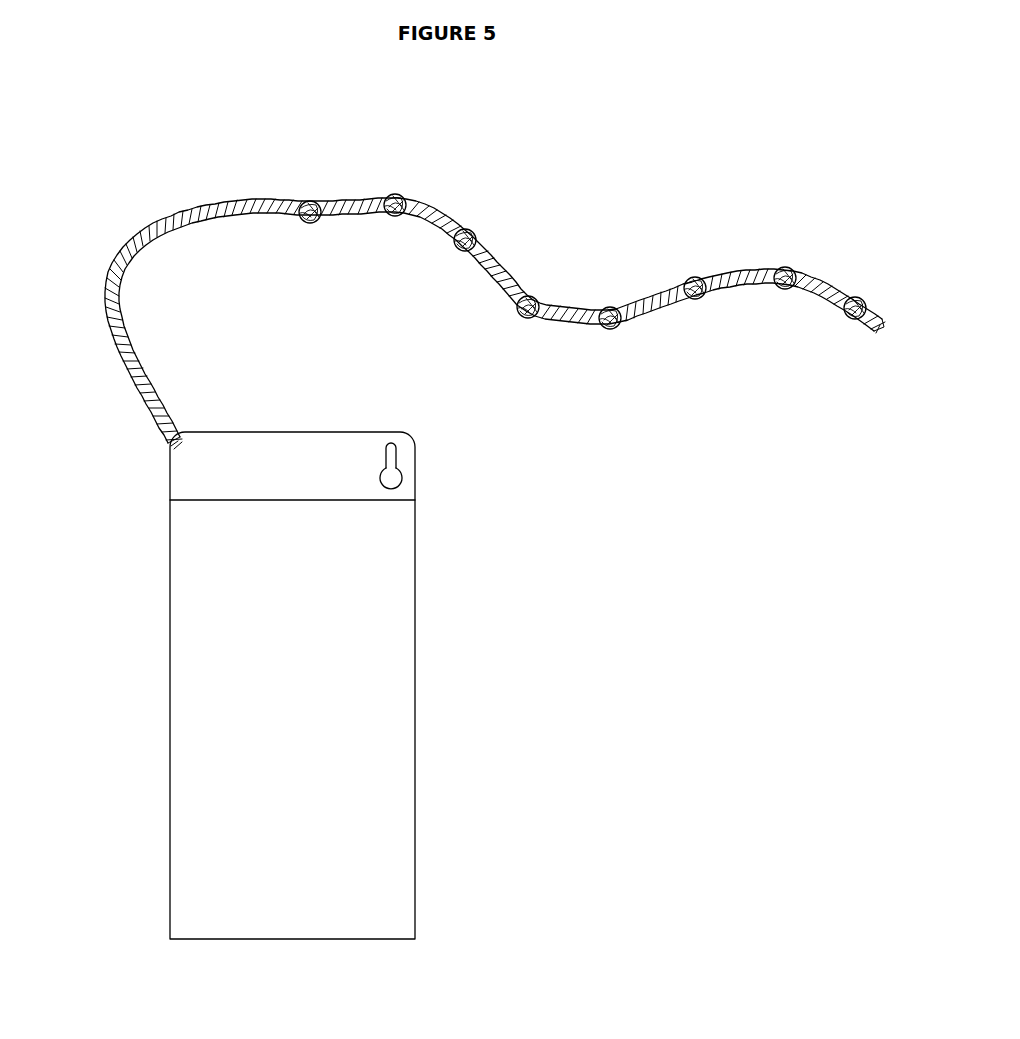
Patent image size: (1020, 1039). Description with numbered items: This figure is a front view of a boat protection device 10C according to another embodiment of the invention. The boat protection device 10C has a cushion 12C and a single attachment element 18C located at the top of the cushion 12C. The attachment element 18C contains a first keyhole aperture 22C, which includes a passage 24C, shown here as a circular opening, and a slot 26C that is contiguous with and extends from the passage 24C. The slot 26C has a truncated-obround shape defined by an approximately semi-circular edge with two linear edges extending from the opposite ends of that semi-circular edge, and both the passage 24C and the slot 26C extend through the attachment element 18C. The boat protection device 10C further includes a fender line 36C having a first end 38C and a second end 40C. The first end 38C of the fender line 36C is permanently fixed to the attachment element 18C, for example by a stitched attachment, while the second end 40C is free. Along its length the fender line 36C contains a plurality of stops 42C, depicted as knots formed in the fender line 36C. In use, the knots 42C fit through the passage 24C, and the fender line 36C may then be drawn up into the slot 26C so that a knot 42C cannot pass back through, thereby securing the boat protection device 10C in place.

The boat protection device 10C is at (615, 925).
The cushion 12C is at (253, 713).
The attachment element 18C is at (218, 491).
The first keyhole aperture 22C is at (389, 440).
The passage 24C is at (408, 476).
The slot 26C is at (397, 452).
The fender line 36C is at (166, 225).
The first end 38C is at (170, 452).
The second end 40C is at (866, 327).
The stops 42C is at (785, 270).